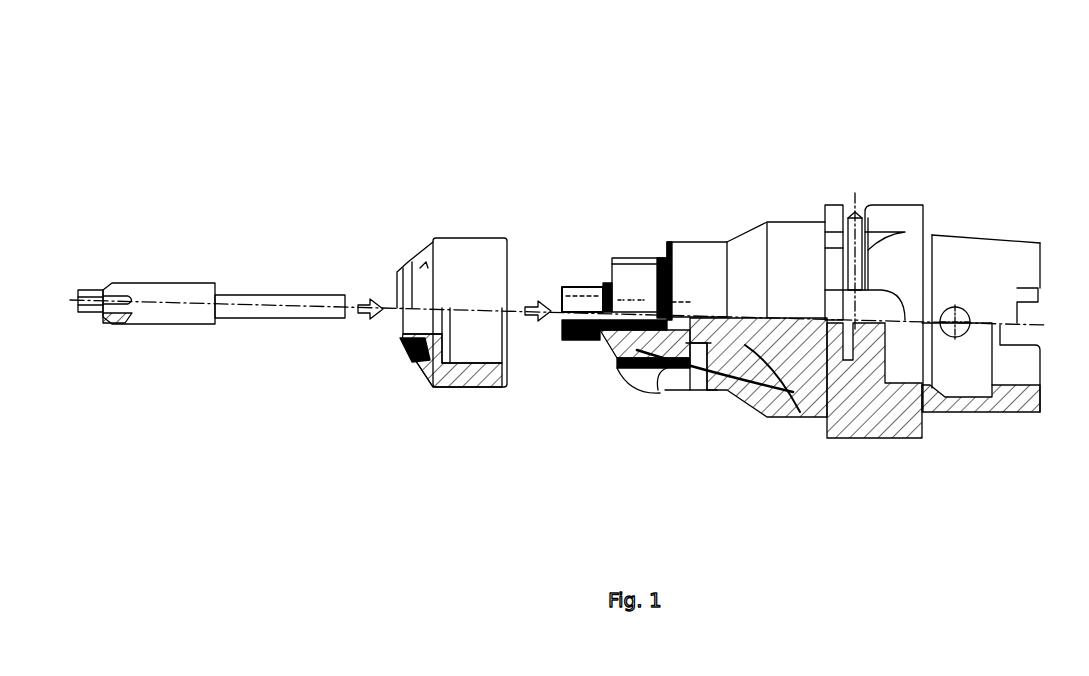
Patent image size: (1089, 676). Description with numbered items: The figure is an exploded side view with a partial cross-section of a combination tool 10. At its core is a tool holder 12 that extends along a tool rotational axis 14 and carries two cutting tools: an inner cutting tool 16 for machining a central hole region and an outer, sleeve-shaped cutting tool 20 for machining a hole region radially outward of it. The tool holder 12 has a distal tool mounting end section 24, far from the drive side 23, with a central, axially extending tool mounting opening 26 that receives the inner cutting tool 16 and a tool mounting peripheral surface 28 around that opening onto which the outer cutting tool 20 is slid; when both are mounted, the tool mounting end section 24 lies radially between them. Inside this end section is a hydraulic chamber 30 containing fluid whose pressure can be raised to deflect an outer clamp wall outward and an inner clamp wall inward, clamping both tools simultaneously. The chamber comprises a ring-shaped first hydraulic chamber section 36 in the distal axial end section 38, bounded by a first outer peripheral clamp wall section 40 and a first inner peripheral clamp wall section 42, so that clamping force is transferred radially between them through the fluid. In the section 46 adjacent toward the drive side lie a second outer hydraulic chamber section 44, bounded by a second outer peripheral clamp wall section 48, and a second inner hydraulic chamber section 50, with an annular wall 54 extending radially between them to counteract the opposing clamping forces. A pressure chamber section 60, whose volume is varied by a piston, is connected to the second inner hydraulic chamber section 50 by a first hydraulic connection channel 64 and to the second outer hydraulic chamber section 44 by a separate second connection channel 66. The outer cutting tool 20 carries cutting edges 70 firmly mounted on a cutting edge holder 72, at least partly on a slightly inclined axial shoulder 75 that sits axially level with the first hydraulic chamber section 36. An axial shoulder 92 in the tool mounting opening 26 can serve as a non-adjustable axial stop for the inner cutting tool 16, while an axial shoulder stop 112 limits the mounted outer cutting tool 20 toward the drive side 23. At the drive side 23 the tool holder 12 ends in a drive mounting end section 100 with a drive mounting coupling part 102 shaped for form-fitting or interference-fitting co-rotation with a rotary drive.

The combination tool 10 is at (548, 62).
The tool holder 12 is at (884, 205).
The tool rotational axis 14 is at (287, 307).
The inner cutting tool 16 is at (175, 283).
The outer cutting tool 20 is at (470, 235).
The drive side 23 is at (1038, 242).
The tool mounting end section 24 is at (562, 290).
The tool mounting opening 26 is at (552, 298).
The tool mounting peripheral surface 28 is at (628, 290).
The hydraulic chamber 30 is at (628, 367).
The first hydraulic chamber section 36 is at (562, 290).
The distal axial end section 38 is at (583, 285).
The first outer peripheral clamp wall section 40 is at (573, 340).
The first inner peripheral clamp wall section 42 is at (560, 318).
The second outer hydraulic chamber section 44 is at (640, 297).
The section axially adjacent to the distal axial end section 46 is at (632, 290).
The second outer peripheral clamp wall section 48 is at (650, 258).
The second inner hydraulic chamber section 50 is at (660, 292).
The annular wall 54 is at (732, 395).
The pressure chamber section 60 is at (713, 350).
The first hydraulic connection channel 64 is at (680, 333).
The second connection channel 66 is at (803, 420).
The cutting edges 70 is at (410, 353).
The cutting edge holder 72 is at (450, 257).
The axial shoulder 75 is at (597, 357).
The axial shoulder 92 is at (703, 320).
The drive mounting end section 100 is at (977, 263).
The drive mounting coupling part 102 is at (963, 337).
The axial shoulder stop 112 is at (660, 390).